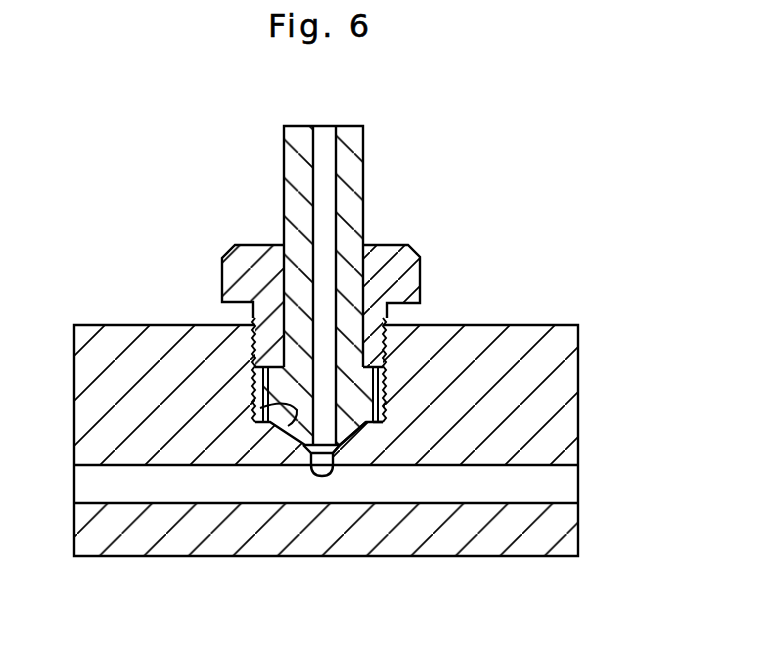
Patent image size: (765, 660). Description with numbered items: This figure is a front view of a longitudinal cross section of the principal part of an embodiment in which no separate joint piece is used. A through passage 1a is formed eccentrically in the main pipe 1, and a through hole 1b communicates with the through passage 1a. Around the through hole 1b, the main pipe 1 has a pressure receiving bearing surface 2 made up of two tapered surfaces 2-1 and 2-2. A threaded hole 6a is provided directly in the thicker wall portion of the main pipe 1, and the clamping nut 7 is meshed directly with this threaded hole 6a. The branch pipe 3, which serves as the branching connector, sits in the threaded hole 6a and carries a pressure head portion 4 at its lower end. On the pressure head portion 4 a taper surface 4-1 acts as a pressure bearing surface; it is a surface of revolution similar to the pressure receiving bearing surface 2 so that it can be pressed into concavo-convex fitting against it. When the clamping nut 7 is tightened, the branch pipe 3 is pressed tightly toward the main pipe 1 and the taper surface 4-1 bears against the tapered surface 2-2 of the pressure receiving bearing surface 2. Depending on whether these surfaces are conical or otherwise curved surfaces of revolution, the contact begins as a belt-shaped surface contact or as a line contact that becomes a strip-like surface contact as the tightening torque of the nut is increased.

The main pipe 1 is at (565, 370).
The through passage 1a is at (565, 485).
The through hole 1b is at (320, 462).
The pressure receiving bearing surface 2 is at (302, 450).
The tapered surface 2-1 is at (352, 432).
The tapered surface 2-2 is at (340, 447).
The branch pipe 3 is at (356, 157).
The pressure head portion 4 is at (370, 425).
The taper surface 4-1 is at (260, 408).
The threaded hole 6a is at (386, 358).
The clamping nut 7 is at (390, 253).